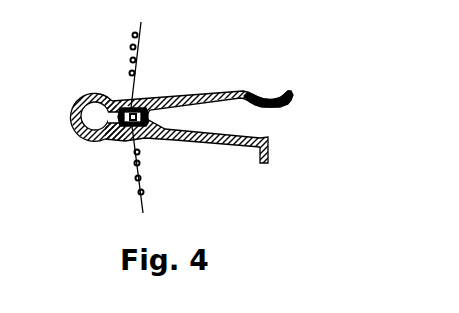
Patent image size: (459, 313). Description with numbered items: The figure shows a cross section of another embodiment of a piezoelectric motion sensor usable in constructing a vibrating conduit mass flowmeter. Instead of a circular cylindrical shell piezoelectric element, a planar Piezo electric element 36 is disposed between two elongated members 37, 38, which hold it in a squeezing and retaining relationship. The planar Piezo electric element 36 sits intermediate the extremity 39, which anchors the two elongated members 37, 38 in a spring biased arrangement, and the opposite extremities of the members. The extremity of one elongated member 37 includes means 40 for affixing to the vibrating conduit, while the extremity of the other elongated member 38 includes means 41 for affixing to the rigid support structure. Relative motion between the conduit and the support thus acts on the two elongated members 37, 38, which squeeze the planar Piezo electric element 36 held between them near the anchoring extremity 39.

The planar Piezo electric element 36 is at (126, 107).
The elongated member 37 is at (195, 95).
The elongated member 38 is at (193, 141).
The extremity anchoring the two elongated members 39 is at (72, 118).
The means for affixing to the vibrating conduit 40 is at (268, 98).
The means for affixing to the rigid support structure 41 is at (263, 137).